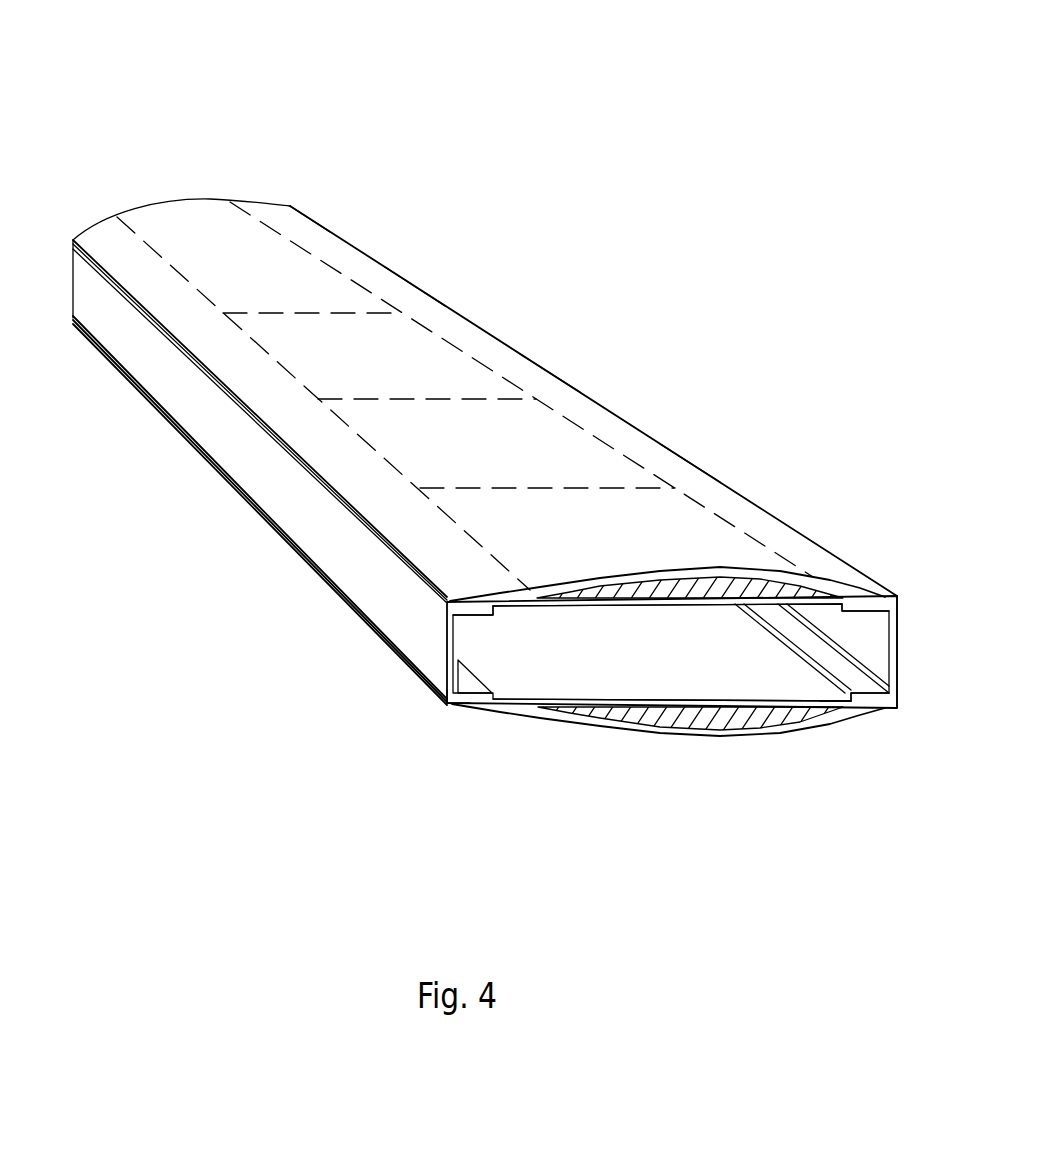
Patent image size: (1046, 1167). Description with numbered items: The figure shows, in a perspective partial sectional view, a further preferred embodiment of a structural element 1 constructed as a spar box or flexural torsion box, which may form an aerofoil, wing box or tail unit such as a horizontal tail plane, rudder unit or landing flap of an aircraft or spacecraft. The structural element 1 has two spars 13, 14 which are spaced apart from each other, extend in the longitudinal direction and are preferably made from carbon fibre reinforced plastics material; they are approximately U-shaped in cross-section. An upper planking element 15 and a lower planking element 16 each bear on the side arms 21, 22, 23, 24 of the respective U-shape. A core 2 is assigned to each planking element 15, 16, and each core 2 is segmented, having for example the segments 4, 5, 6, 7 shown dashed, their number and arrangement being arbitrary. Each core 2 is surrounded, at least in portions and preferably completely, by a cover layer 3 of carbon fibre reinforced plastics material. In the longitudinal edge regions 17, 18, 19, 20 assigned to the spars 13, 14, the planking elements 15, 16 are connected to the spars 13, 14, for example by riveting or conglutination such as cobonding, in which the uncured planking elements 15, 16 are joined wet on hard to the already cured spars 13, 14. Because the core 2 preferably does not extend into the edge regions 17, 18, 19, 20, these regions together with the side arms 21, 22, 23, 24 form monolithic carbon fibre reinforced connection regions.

The structural element 1 is at (225, 100).
The core 2 is at (758, 575).
The cover layer 3 is at (638, 447).
The segment 4 is at (688, 514).
The segment 5 is at (548, 423).
The segment 6 is at (413, 337).
The segment 7 is at (290, 257).
The spar 13 is at (874, 655).
The spar 14 is at (228, 430).
The upper planking element 15 is at (378, 500).
The lower planking element 16 is at (527, 722).
The edge region 17 is at (512, 603).
The edge region 18 is at (878, 598).
The edge region 19 is at (484, 707).
The edge region 20 is at (855, 706).
The side arm 21 is at (866, 608).
The side arm 22 is at (876, 698).
The side arm 23 is at (474, 612).
The side arm 24 is at (457, 707).